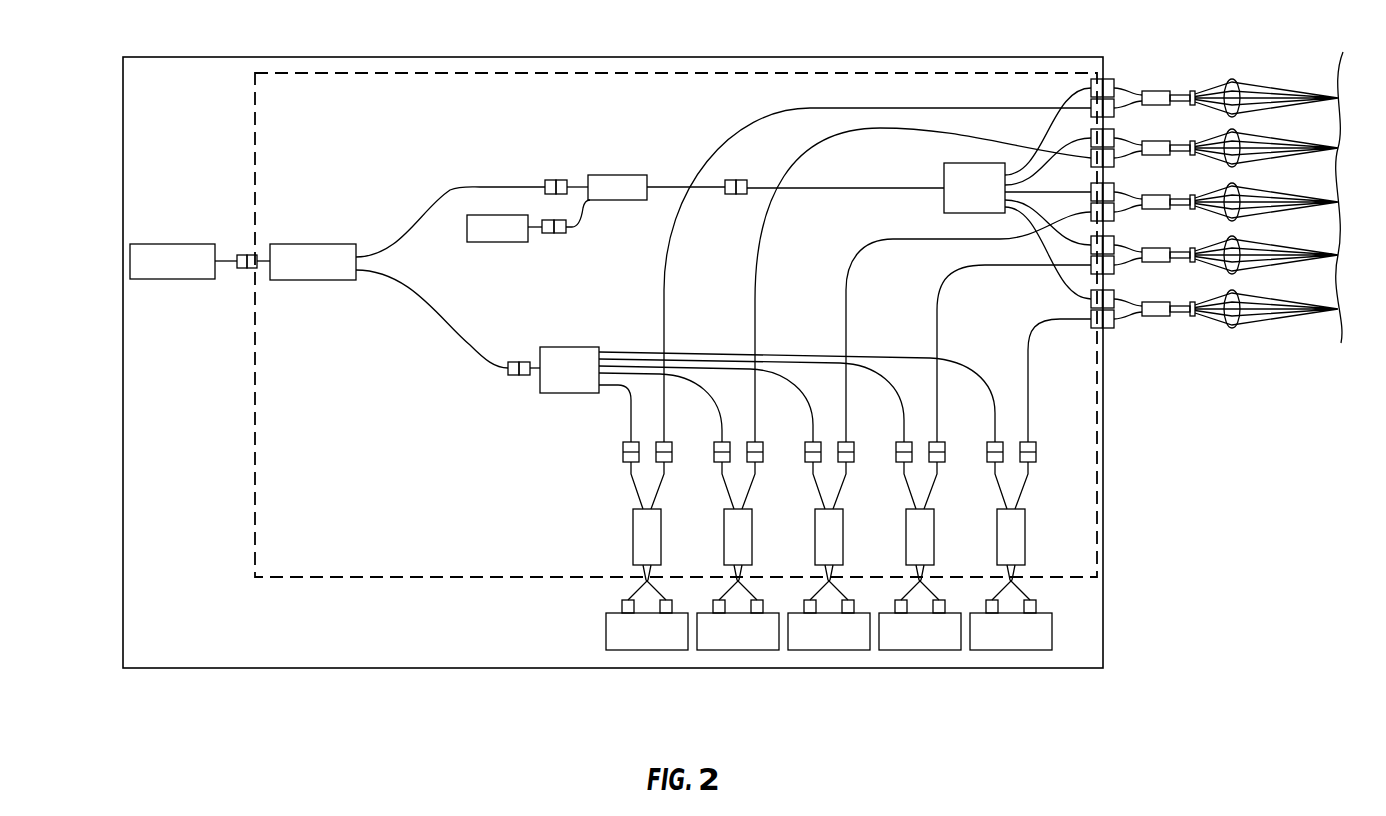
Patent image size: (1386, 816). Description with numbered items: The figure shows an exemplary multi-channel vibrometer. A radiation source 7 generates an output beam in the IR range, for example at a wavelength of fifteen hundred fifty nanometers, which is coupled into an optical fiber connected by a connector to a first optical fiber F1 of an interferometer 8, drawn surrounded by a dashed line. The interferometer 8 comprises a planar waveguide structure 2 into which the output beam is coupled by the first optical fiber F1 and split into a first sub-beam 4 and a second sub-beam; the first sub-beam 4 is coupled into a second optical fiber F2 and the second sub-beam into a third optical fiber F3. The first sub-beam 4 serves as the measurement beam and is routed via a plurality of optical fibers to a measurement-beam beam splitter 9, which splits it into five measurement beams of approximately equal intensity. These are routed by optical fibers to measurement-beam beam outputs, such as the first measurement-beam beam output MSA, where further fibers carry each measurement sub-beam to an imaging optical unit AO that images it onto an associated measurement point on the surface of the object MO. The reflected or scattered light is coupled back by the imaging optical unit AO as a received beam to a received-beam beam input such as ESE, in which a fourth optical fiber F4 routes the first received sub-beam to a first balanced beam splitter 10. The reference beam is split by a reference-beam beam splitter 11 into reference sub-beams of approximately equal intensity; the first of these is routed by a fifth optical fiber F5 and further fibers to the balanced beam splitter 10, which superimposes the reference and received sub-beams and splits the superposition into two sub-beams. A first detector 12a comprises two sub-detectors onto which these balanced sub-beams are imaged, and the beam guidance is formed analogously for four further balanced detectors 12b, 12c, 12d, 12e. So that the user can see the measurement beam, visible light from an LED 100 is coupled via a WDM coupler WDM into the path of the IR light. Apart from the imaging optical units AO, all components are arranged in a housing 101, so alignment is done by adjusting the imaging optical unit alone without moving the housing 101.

The planar waveguide structure 2 is at (313, 282).
The first sub-beam 4 is at (513, 186).
The radiation source 7 is at (187, 244).
The interferometer 8 is at (255, 96).
The measurement-beam beam splitter 9 is at (944, 202).
The balanced beam splitter 10 is at (633, 530).
The reference-beam beam splitter 11 is at (580, 347).
The first detector 12a is at (637, 650).
The balanced detector 12b is at (728, 650).
The balanced detector 12c is at (819, 650).
The balanced detector 12d is at (910, 650).
The balanced detector 12e is at (1001, 650).
The LED 100 is at (490, 242).
The housing 101 is at (390, 668).
The first optical fiber F1 is at (258, 253).
The second optical fiber F2 is at (420, 218).
The third optical fiber F3 is at (431, 303).
The fourth optical fiber F4 is at (741, 127).
The fifth optical fiber F5 is at (631, 414).
The WDM coupler WDM is at (621, 175).
The measurement-beam beam output MSA is at (1108, 79).
The received-beam beam input ESE is at (1118, 110).
The imaging optical unit AO is at (1232, 78).
The object MO is at (1335, 217).